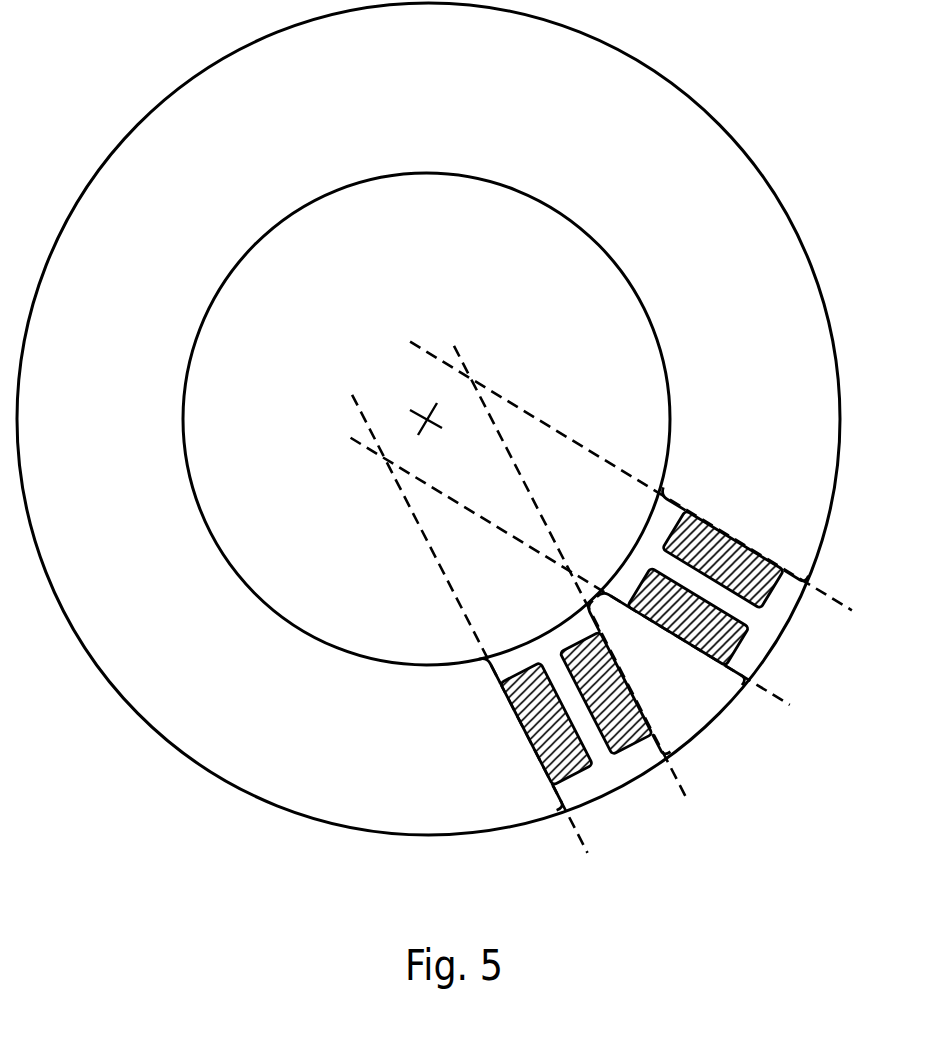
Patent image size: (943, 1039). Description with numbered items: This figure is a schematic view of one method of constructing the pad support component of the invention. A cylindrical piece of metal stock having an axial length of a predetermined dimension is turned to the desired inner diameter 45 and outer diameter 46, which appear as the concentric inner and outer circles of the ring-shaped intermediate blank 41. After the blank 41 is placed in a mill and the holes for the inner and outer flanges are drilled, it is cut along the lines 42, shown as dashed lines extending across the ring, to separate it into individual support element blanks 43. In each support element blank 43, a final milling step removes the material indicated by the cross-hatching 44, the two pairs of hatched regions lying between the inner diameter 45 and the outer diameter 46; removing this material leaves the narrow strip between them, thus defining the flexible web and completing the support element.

The intermediate blank 41 is at (455, 428).
The cutting lines 42 is at (523, 412).
The support element blank 43 is at (767, 546).
The cross-hatched material 44 is at (611, 654).
The inner diameter 45 is at (668, 421).
The outer diameter 46 is at (838, 473).